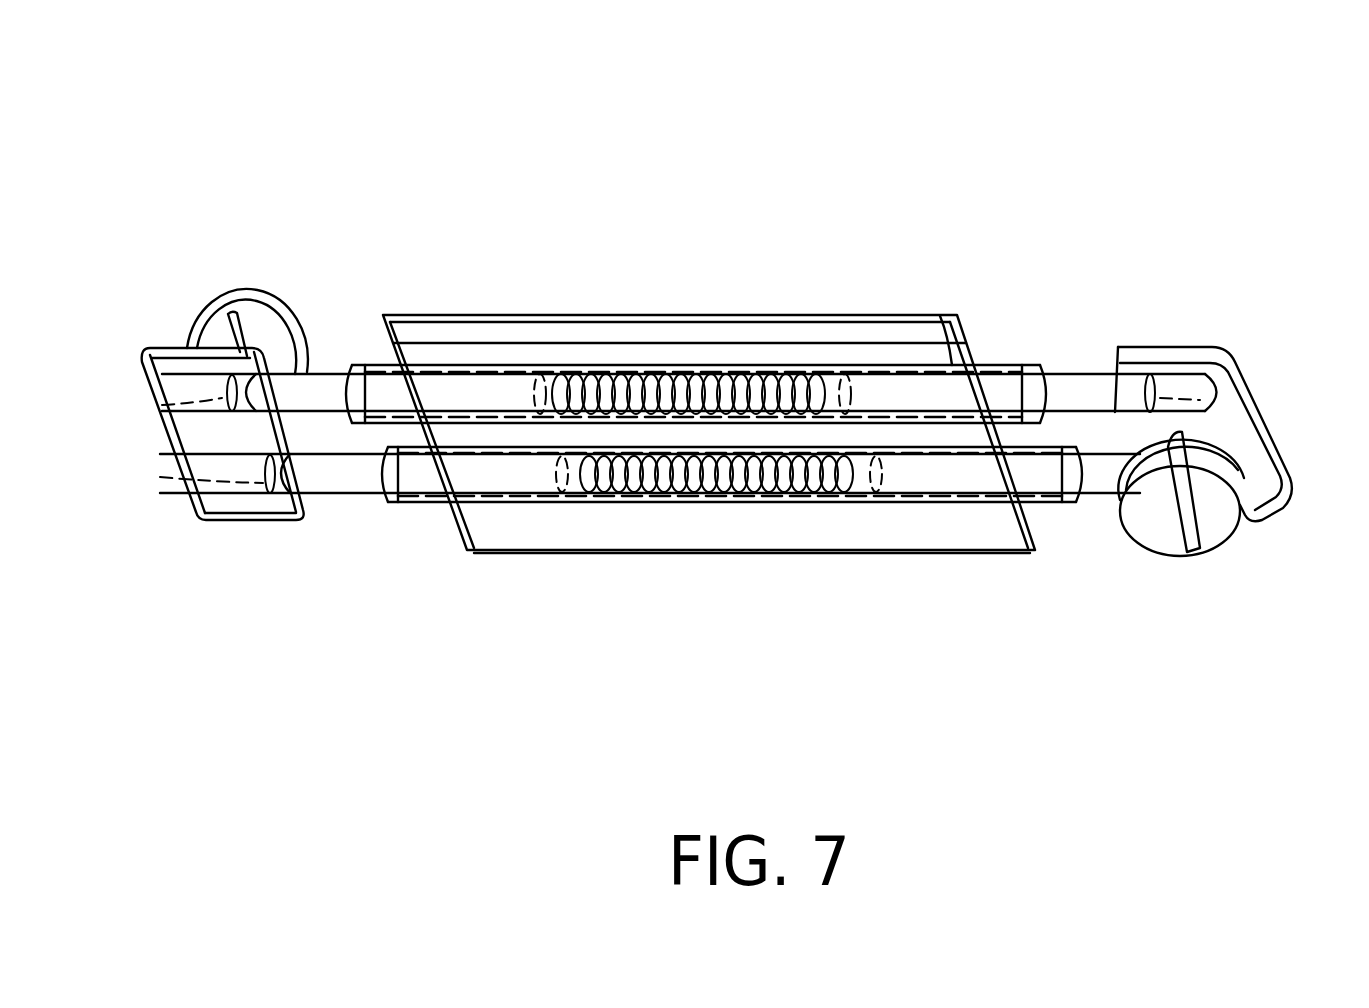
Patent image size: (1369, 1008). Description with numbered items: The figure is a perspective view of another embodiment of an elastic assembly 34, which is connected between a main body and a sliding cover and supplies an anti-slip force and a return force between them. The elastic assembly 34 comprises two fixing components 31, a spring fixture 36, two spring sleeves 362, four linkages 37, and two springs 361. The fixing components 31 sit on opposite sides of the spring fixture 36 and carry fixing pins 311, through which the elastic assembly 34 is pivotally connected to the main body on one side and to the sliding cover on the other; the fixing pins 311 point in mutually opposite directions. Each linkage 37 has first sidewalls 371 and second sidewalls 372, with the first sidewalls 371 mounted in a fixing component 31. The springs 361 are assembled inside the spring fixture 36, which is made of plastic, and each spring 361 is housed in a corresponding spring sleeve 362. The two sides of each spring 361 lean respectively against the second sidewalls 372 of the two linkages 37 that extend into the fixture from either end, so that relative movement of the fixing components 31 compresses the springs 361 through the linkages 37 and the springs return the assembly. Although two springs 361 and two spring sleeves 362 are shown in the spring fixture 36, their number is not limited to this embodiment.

The elastic assembly 34 is at (140, 88).
The fixing component 31 is at (237, 520).
The fixing pin 311 is at (265, 315).
The spring fixture 36 is at (813, 553).
The spring 361 is at (680, 378).
The spring sleeve 362 is at (1008, 365).
The linkage 37 is at (322, 372).
The first sidewall 371 is at (225, 392).
The second sidewall 372 is at (557, 378).